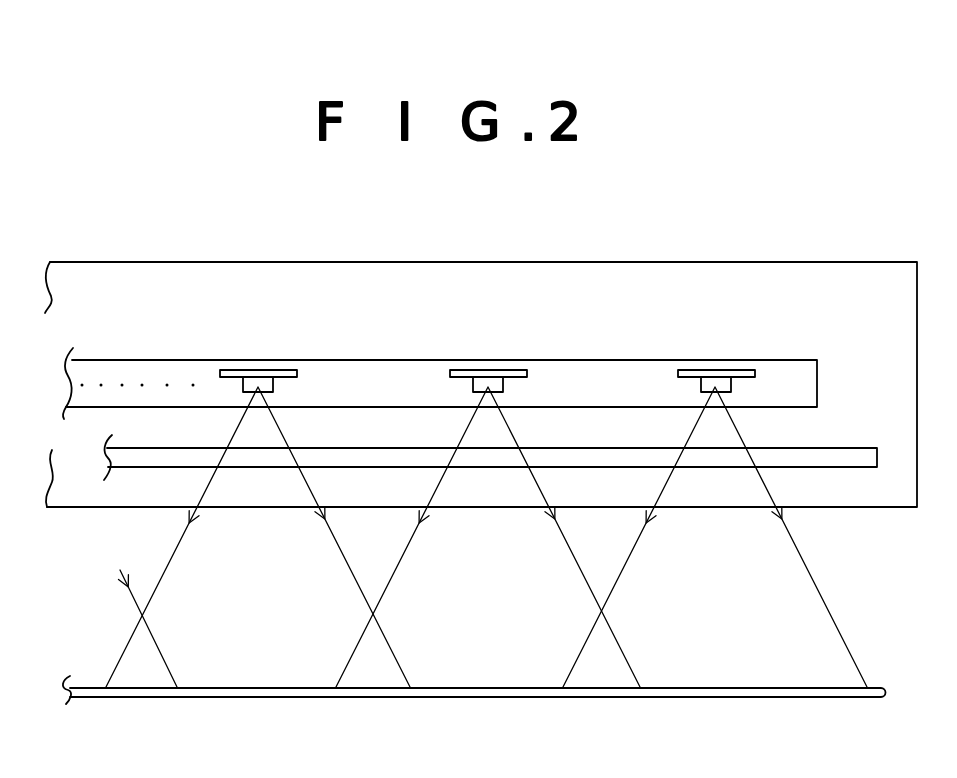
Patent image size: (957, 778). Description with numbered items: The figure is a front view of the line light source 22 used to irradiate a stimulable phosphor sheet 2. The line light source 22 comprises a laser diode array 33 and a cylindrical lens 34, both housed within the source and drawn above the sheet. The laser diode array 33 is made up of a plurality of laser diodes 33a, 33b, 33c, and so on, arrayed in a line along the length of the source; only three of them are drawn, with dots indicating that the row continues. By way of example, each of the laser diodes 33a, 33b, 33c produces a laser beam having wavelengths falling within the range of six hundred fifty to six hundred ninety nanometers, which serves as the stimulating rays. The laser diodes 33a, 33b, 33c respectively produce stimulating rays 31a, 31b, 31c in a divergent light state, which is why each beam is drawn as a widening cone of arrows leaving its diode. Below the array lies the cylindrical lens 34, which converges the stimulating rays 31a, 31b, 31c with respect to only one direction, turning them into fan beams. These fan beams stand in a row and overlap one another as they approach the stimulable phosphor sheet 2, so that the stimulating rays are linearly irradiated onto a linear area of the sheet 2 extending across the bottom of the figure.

The stimulable phosphor sheet 2 is at (886, 692).
The line light source 22 is at (668, 262).
The stimulating rays 31a is at (616, 583).
The stimulating rays 31b is at (383, 593).
The stimulating rays 31c is at (158, 583).
The laser diode array 33 is at (585, 358).
The laser diode 33a is at (719, 370).
The laser diode 33b is at (487, 370).
The laser diode 33c is at (253, 370).
The cylindrical lens 34 is at (838, 448).